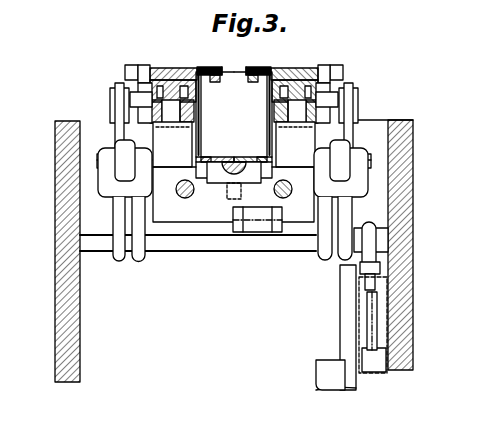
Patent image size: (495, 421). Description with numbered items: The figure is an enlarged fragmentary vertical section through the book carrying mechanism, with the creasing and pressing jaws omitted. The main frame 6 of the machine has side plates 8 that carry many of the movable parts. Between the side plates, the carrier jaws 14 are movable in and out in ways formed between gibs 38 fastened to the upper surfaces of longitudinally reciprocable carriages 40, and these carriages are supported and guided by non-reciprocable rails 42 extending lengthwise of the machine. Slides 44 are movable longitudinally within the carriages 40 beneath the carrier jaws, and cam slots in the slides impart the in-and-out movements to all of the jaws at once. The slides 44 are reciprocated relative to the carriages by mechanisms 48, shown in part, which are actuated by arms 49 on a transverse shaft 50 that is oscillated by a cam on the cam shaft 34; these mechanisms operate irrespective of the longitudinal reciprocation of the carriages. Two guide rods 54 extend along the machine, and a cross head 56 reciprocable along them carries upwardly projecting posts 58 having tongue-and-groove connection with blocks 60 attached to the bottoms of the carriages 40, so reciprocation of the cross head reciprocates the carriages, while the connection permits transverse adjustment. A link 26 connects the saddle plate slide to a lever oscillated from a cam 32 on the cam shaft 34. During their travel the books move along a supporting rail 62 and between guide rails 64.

The main frame 6 is at (414, 224).
The side plates 8 is at (60, 322).
The carrier jaws 14 is at (233, 72).
The link 26 is at (370, 318).
The cam 32 is at (348, 310).
The cam shaft 34 is at (325, 367).
The gibs 38 is at (181, 68).
The carriages 40 is at (270, 95).
The rails 42 is at (270, 112).
The slides 44 is at (168, 68).
The mechanisms 48 is at (365, 142).
The arms 49 is at (367, 226).
The transverse shaft 50 is at (295, 246).
The guide rods 54 is at (193, 196).
The cross head 56 is at (222, 214).
The posts 58 is at (184, 152).
The blocks 60 is at (170, 108).
The supporting rail 62 is at (242, 165).
The guide rails 64 is at (258, 76).